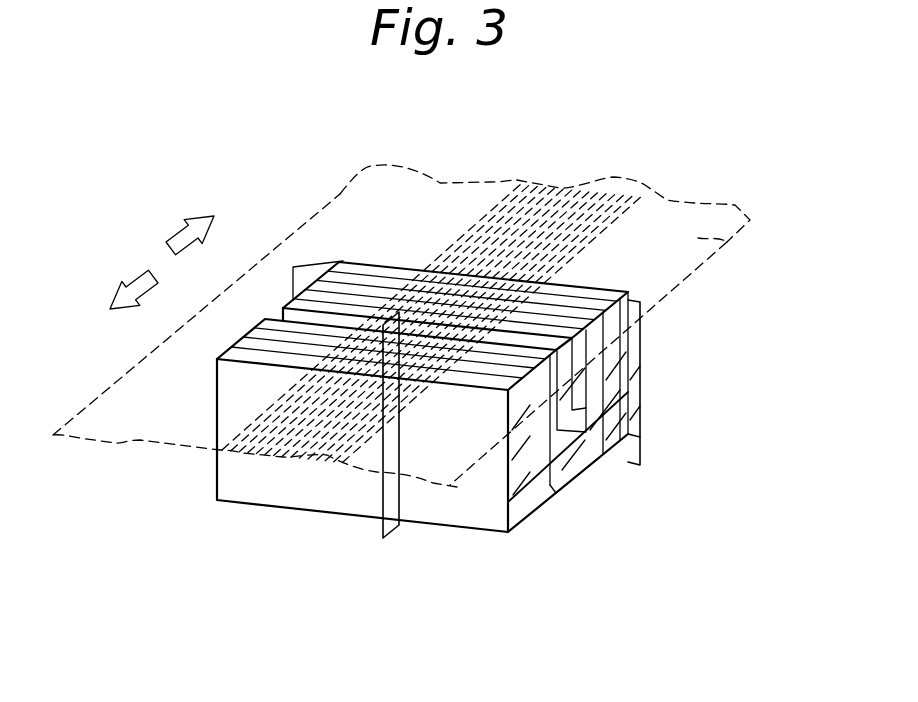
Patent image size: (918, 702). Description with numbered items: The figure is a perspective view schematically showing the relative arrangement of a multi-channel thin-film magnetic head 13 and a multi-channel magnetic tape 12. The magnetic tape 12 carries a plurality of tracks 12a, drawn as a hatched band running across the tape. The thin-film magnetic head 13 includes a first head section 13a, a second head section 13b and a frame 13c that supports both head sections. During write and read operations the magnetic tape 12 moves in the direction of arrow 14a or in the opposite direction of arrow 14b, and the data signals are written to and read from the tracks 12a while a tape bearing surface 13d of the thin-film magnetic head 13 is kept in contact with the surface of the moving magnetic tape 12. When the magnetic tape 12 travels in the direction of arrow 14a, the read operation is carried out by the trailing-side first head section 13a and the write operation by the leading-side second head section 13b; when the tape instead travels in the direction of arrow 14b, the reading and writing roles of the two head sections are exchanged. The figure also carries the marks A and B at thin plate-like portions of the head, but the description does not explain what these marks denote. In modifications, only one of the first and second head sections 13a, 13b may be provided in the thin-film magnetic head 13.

The multi-channel magnetic tape 12 is at (731, 243).
The tracks 12a is at (650, 176).
The multi-channel thin-film magnetic head 13 is at (463, 540).
The first head section 13a is at (638, 447).
The second head section 13b is at (597, 453).
The frame 13c is at (543, 493).
The tape bearing surface 13d is at (362, 307).
The arrow 14a is at (203, 224).
The arrow 14b is at (147, 276).
The plate A is at (633, 380).
The plate B is at (393, 493).